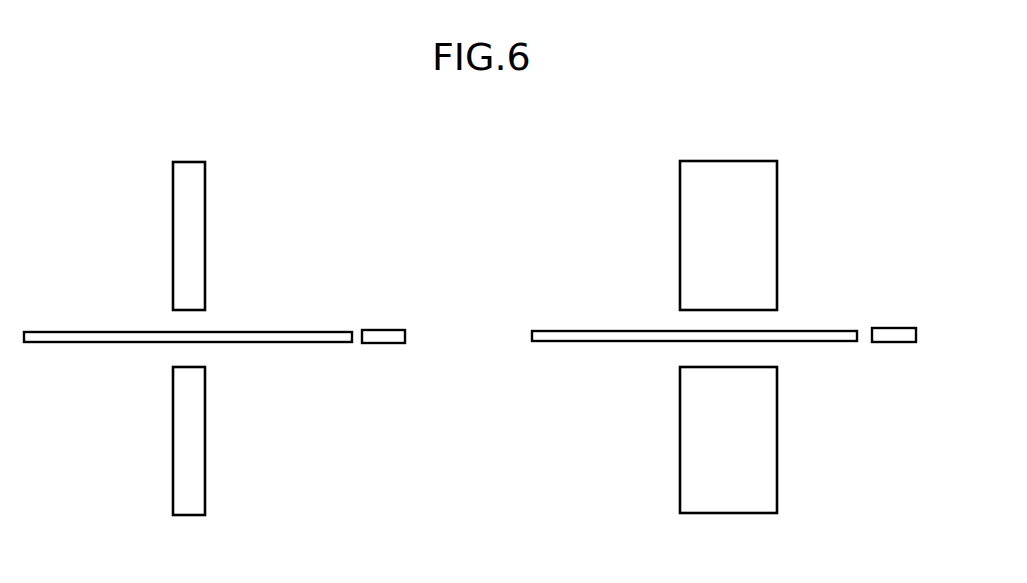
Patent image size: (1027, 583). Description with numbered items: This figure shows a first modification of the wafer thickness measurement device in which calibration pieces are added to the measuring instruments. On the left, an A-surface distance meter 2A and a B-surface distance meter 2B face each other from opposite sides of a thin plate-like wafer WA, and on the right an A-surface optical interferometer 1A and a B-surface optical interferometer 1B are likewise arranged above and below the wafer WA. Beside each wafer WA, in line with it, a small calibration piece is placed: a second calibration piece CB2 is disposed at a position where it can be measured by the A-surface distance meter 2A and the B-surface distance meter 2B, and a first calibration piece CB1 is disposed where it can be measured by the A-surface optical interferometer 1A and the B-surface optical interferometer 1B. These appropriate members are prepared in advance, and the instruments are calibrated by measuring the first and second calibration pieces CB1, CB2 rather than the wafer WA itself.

The A-surface distance meter 2A is at (205, 175).
The B-surface distance meter 2B is at (205, 497).
The A-surface optical interferometer 1A is at (777, 174).
The B-surface optical interferometer 1B is at (777, 497).
The wafer WA is at (283, 332).
The first calibration piece CB1 is at (898, 342).
The second calibration piece CB2 is at (385, 343).